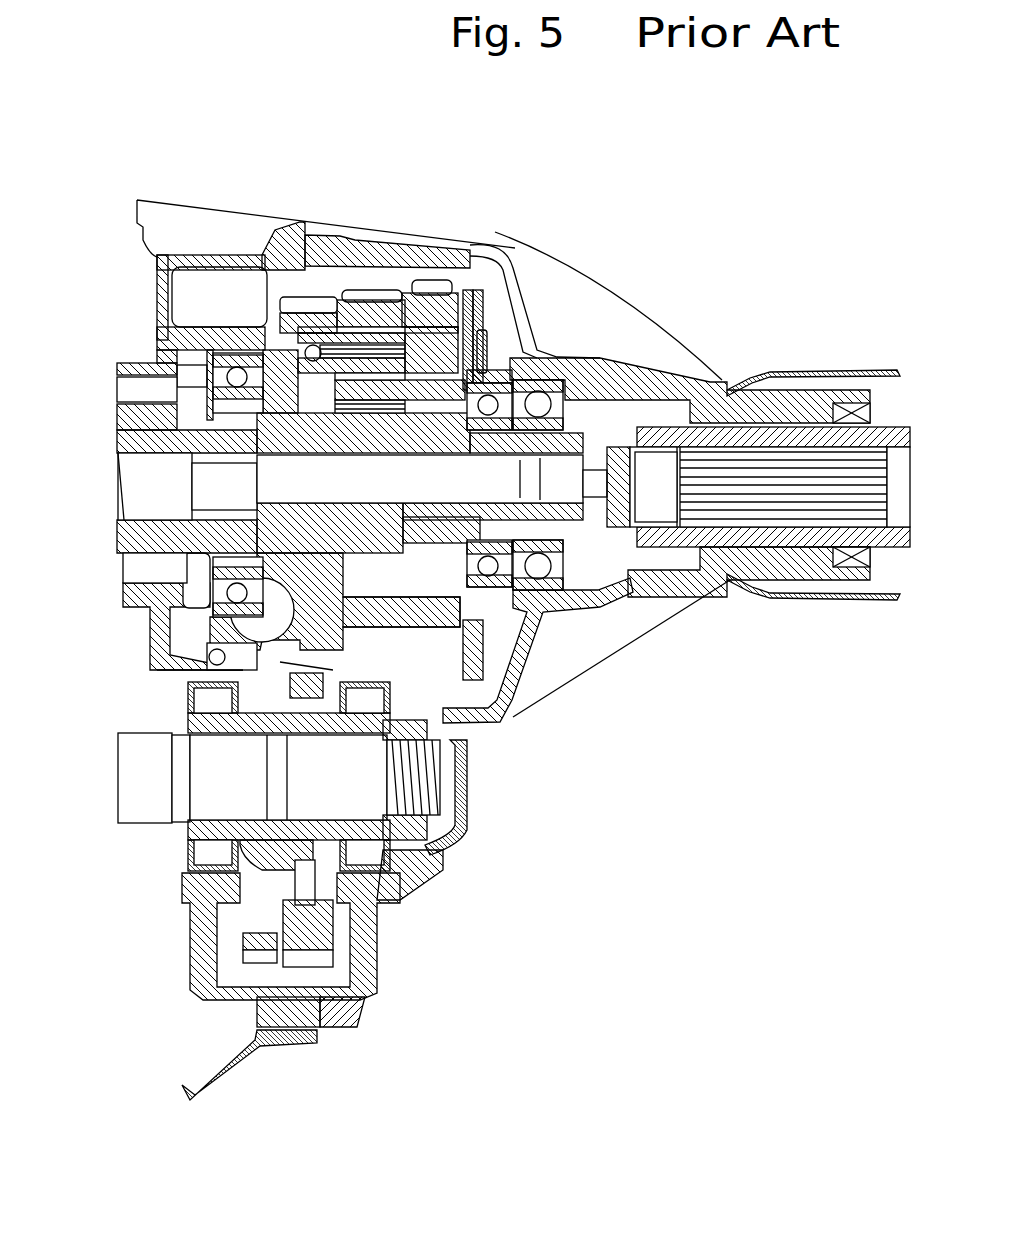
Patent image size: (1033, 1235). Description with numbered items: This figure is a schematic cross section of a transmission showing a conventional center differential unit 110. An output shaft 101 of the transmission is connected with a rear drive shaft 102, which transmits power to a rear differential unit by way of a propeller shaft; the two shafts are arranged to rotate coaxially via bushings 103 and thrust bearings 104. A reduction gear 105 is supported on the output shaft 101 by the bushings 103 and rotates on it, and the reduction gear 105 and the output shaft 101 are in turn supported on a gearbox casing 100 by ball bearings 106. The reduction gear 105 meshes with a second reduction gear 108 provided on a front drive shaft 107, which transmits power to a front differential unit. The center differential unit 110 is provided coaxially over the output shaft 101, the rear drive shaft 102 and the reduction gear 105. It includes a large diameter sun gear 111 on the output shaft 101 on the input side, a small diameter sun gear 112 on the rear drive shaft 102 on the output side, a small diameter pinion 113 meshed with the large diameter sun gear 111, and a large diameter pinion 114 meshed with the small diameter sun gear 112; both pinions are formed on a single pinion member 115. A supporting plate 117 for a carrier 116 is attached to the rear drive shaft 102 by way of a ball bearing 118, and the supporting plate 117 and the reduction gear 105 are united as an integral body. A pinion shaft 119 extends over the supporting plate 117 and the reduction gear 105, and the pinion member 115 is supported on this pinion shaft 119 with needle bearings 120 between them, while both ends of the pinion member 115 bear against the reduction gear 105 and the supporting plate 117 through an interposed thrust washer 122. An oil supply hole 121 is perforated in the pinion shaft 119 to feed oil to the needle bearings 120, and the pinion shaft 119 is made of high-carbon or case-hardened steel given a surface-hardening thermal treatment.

The gearbox casing 100 is at (215, 255).
The output shaft 101 is at (118, 437).
The rear drive shaft 102 is at (778, 468).
The bushings 103 is at (275, 468).
The thrust bearings 104 is at (328, 468).
The reduction gear 105 is at (300, 300).
The ball bearings 106 is at (222, 352).
The front drive shaft 107 is at (152, 797).
The reduction gear 108 is at (325, 955).
The center differential unit 110 is at (482, 275).
The large diameter sun gear 111 is at (352, 560).
The small diameter sun gear 112 is at (423, 548).
The small diameter pinion 113 is at (380, 300).
The large diameter pinion 114 is at (444, 282).
The pinion member 115 is at (425, 302).
The carrier 116 is at (370, 625).
The supporting plate 117 is at (483, 335).
The ball bearing 118 is at (490, 378).
The pinion shaft 119 is at (485, 372).
The needle bearings 120 is at (363, 293).
The oil supply hole 121 is at (250, 300).
The thrust washer 122 is at (468, 290).